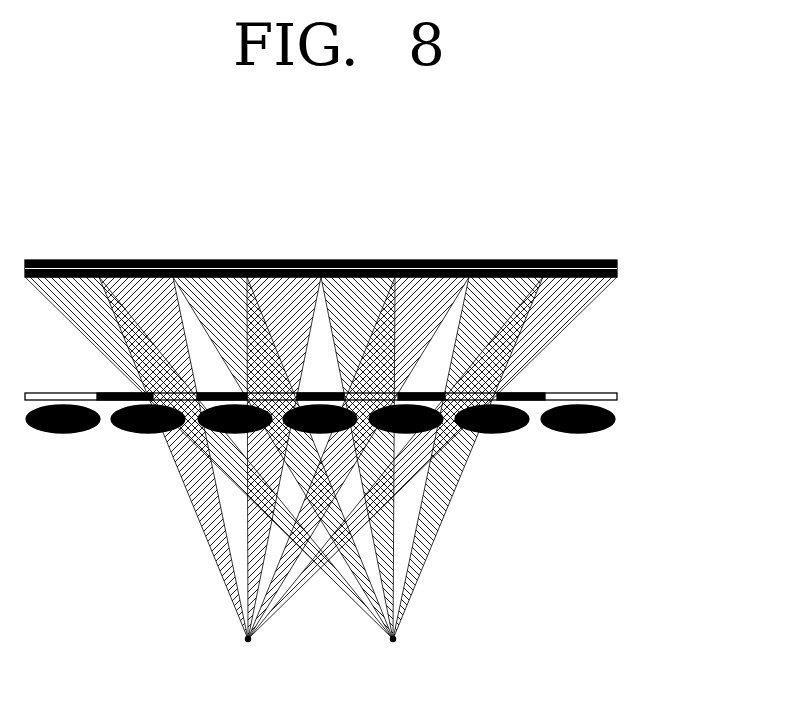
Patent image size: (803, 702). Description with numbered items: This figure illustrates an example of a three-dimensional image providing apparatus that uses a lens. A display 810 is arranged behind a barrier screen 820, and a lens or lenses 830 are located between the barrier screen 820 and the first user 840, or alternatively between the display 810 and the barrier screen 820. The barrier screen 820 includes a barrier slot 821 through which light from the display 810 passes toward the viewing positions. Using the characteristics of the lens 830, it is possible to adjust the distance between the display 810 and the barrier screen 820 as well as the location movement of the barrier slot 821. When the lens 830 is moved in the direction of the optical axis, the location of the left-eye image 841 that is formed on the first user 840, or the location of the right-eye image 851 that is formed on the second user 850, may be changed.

The display 810 is at (608, 250).
The right-eye image 851 is at (63, 226).
The left-eye image 841 is at (137, 226).
The barrier screen 820 is at (608, 387).
The barrier slot 821 is at (152, 393).
The lens 830 is at (615, 421).
The first user 840 is at (236, 656).
The second user 850 is at (405, 656).